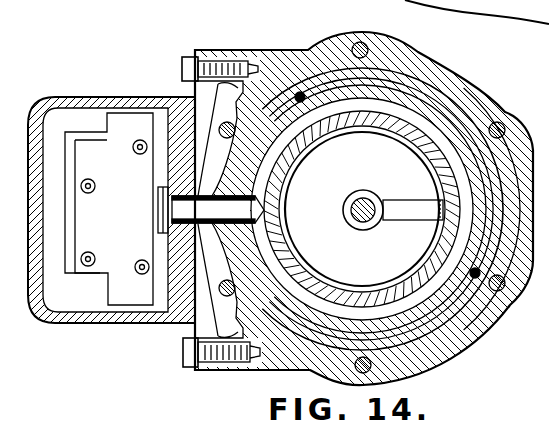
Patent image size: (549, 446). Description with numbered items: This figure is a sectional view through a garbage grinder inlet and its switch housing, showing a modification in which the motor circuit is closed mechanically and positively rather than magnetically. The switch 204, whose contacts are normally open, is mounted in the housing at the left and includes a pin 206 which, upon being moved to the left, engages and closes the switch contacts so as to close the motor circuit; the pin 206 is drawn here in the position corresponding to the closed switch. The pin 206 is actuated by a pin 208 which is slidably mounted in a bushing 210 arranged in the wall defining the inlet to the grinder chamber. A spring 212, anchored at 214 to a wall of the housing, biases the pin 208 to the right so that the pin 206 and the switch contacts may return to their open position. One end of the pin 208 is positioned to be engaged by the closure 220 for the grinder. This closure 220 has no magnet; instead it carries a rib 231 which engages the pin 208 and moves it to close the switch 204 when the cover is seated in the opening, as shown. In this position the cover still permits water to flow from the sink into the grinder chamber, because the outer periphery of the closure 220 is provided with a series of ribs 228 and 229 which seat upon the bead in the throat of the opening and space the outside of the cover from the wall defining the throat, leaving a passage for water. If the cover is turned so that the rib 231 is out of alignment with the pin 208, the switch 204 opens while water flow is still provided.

The switch 204 is at (76, 323).
The pin 206 is at (158, 212).
The pin 208 is at (282, 206).
The bushing 210 is at (287, 182).
The spring 212 is at (166, 234).
The anchor 214 is at (168, 280).
The closure 220 is at (396, 124).
The rib 228 is at (376, 108).
The rib 229 is at (444, 230).
The rib 231 is at (288, 229).